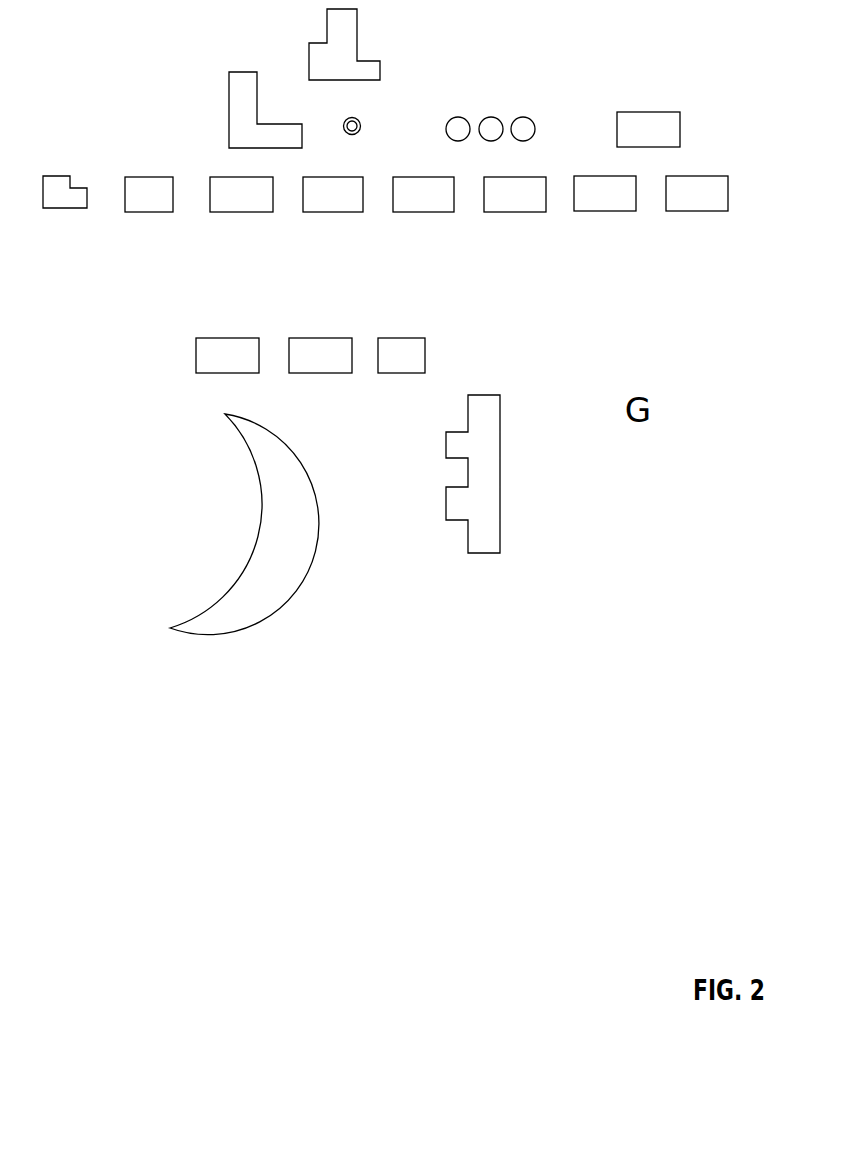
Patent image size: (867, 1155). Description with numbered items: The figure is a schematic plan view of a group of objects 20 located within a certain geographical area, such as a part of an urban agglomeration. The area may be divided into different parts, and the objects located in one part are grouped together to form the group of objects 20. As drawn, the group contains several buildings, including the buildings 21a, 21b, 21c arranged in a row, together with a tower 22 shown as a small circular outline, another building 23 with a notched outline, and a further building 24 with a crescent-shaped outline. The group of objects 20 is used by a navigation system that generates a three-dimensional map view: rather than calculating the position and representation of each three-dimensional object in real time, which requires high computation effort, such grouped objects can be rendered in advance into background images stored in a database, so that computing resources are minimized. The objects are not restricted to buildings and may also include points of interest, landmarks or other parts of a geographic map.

The group of objects 20 is at (587, 569).
The building 21a is at (260, 212).
The building 21b is at (534, 212).
The building 21c is at (717, 211).
The tower 22 is at (363, 126).
The another building 23 is at (500, 404).
The further building 24 is at (319, 533).